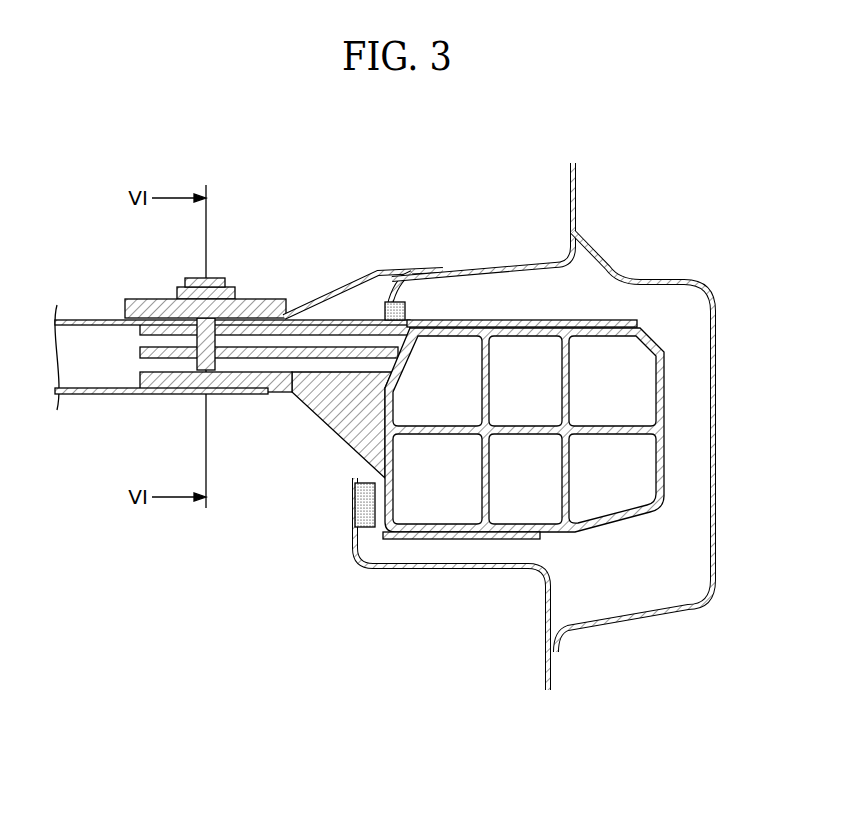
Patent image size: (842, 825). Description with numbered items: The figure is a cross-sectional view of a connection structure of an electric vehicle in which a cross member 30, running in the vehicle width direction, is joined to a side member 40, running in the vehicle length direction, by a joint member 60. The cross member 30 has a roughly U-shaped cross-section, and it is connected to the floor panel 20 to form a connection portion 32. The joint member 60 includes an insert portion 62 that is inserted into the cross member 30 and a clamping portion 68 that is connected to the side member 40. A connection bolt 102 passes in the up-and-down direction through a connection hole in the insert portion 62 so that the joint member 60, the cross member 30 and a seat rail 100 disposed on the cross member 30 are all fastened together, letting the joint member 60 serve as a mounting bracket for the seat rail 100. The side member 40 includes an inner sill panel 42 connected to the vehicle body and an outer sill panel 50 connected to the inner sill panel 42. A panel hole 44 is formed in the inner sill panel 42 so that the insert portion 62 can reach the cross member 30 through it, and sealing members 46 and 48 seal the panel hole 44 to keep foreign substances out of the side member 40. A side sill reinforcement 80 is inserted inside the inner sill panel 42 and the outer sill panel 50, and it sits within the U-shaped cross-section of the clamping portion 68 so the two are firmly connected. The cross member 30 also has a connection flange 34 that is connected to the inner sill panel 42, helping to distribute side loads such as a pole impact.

The floor panel 20 is at (93, 394).
The cross member 30 is at (72, 320).
The connection portion 32 is at (102, 353).
The connection flange 34 is at (363, 278).
The side member 40 is at (519, 434).
The inner sill panel 42 is at (450, 569).
The panel hole 44 is at (406, 456).
The sealing member 46 is at (402, 302).
The sealing member 48 is at (362, 515).
The outer sill panel 50 is at (716, 392).
The joint member 60 is at (275, 400).
The insert portion 62 is at (178, 382).
The clamping portion 68 is at (513, 320).
The side sill reinforcement 80 is at (578, 378).
The seat rail 100 is at (275, 298).
The connection bolt 102 is at (197, 282).